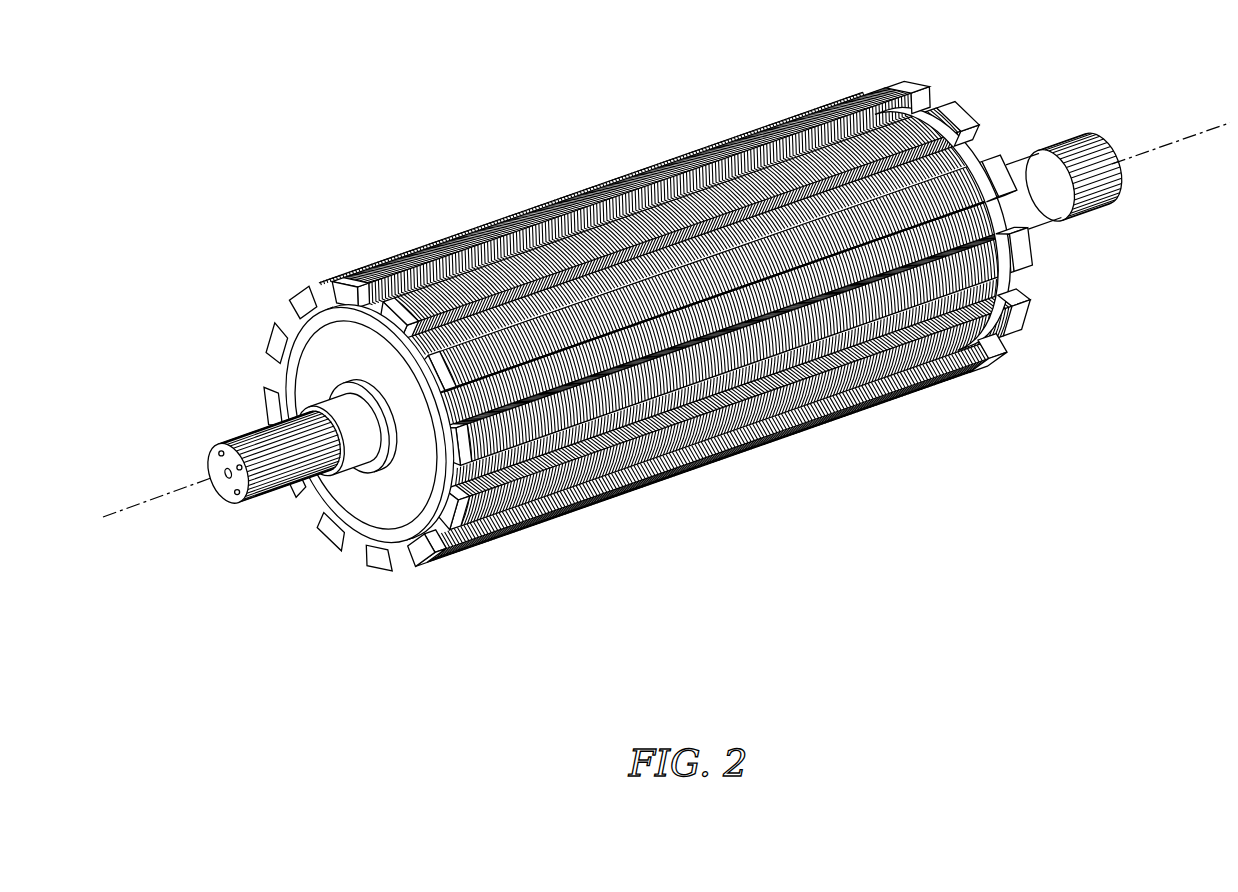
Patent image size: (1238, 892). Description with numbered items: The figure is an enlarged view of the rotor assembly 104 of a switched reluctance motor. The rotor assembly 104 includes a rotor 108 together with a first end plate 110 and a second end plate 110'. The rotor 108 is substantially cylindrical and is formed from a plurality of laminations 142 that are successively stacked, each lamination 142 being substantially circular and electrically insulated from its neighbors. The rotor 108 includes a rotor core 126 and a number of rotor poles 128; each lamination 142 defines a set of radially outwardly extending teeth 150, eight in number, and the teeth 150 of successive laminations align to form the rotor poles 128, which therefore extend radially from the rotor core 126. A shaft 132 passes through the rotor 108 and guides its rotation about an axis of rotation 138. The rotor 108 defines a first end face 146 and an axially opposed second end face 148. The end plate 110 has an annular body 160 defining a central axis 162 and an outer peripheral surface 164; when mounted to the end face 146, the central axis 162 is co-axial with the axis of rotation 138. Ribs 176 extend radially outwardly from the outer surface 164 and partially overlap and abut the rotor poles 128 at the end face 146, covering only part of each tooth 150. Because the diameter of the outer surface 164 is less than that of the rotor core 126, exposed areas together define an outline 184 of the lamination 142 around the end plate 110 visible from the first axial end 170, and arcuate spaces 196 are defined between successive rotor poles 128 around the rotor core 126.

The rotor assembly 104 is at (250, 120).
The rotor 108 is at (666, 328).
The first end plate 110 is at (370, 436).
The second end plate 110' is at (987, 228).
The rotor core 126 is at (455, 540).
The rotor poles 128 is at (388, 245).
The shaft 132 is at (996, 161).
The axis of rotation 138 is at (104, 512).
The laminations 142 is at (285, 318).
The first end face 146 is at (306, 280).
The second end face 148 is at (990, 244).
The teeth 150 is at (421, 552).
The annular body 160 is at (314, 497).
The central axis 162 is at (160, 474).
The peripheral surface 164 is at (364, 303).
The first axial end 170 is at (290, 383).
The ribs 176 is at (402, 540).
The outline 184 is at (318, 272).
The arcuate spaces 196 is at (393, 245).